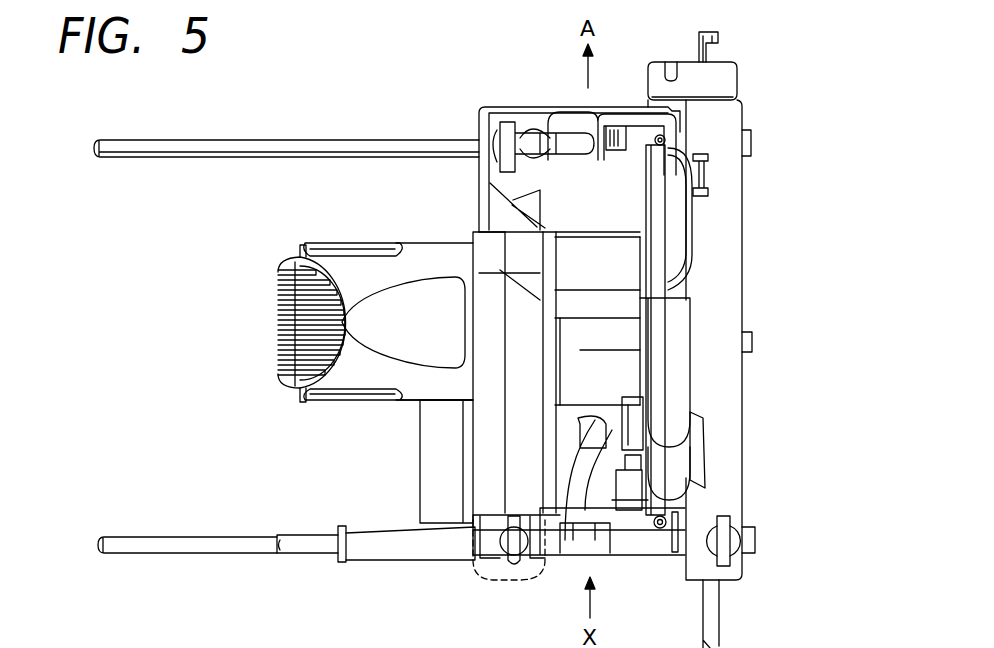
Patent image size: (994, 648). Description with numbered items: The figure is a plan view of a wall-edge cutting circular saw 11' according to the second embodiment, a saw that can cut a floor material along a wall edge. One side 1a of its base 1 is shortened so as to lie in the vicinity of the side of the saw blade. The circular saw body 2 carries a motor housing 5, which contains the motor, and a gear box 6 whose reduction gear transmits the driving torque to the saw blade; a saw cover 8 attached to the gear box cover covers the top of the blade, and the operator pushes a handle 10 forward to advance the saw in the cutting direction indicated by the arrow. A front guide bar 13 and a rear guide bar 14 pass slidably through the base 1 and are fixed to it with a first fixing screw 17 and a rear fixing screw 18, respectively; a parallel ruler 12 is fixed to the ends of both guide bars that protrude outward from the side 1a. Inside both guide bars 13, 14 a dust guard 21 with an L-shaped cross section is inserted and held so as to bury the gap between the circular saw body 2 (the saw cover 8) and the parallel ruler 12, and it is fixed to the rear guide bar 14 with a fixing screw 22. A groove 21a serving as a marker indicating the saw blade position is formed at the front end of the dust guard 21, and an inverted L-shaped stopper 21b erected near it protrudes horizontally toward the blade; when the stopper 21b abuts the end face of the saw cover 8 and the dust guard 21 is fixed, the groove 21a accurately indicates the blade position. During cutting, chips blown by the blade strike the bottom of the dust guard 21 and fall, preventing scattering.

The base 1 is at (500, 110).
The side of the base 1a is at (676, 556).
The circular saw body 2 is at (410, 412).
The motor housing 5 is at (418, 247).
The gear box 6 is at (605, 352).
The saw cover 8 is at (690, 318).
The handle 10 is at (482, 450).
The wall-edge cutting circular saw 11' is at (736, 57).
The parallel ruler 12 is at (712, 620).
The front guide bar 13 is at (206, 146).
The rear guide bar 14 is at (190, 550).
The first fixing screw 17 is at (500, 146).
The rear fixing screw 18 is at (513, 566).
The dust guard 21 is at (735, 243).
The groove 21a is at (672, 76).
The stopper 21b is at (706, 176).
The fixing screw 22 is at (724, 544).